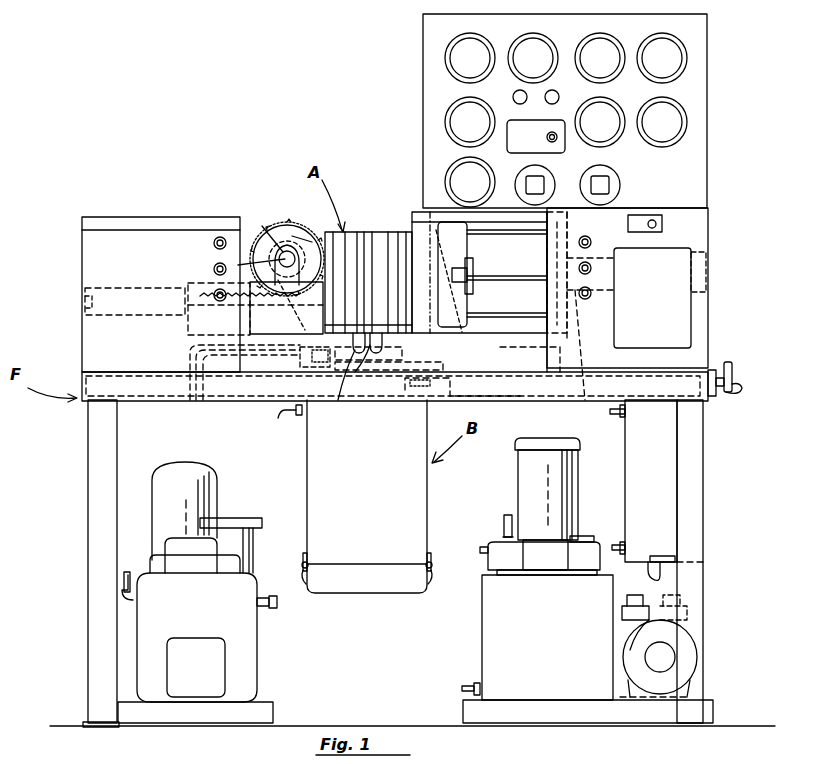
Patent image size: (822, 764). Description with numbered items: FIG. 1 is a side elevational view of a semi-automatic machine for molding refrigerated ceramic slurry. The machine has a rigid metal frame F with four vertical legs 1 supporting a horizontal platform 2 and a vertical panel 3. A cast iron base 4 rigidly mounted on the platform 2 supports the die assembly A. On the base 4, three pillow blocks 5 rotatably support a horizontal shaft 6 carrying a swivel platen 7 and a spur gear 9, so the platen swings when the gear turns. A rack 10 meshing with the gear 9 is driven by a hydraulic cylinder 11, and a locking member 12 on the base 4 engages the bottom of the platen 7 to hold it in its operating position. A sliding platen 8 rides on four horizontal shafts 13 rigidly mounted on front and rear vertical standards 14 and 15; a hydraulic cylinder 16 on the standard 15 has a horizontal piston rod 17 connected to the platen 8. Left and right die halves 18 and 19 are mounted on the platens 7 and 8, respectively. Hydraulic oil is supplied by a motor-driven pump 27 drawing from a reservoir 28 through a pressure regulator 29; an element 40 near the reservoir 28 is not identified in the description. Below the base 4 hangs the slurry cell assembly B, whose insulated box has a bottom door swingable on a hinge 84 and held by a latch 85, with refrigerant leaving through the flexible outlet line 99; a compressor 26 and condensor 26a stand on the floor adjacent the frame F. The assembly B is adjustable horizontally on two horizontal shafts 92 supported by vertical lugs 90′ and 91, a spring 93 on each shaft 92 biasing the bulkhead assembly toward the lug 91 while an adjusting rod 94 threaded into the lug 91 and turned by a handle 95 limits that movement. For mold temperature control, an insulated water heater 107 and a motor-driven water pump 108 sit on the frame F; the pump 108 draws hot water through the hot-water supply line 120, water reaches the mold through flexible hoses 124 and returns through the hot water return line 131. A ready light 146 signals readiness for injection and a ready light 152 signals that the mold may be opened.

The vertical legs 1 is at (87, 492).
The horizontal platform 2 is at (148, 402).
The vertical panel 3 is at (423, 74).
The cast iron base 4 is at (196, 360).
The pillow blocks 5 is at (267, 228).
The horizontal shaft 6 is at (254, 258).
The swivel platen 7 is at (312, 242).
The sliding platen 8 is at (470, 292).
The spur gear 9 is at (284, 222).
The rack 10 is at (210, 285).
The hydraulic cylinder 11 is at (125, 290).
The locking member 12 is at (305, 326).
The horizontal shafts 13 is at (483, 234).
The front vertical standard 14 is at (412, 212).
The rear vertical standard 15 is at (555, 260).
The hydraulic cylinder 16 is at (655, 254).
The horizontal piston rod 17 is at (510, 279).
The left die half 18 is at (358, 232).
The right die half 19 is at (372, 232).
The compressor 26 is at (248, 645).
The condensor 26a is at (218, 482).
The motor-driven pump 27 is at (545, 542).
The reservoir 28 is at (542, 645).
The pressure regulator 29 is at (504, 515).
The drain fitting 40 is at (466, 686).
The hinge 84 is at (430, 574).
The latch 85 is at (302, 562).
The vertical lug 90′ is at (245, 372).
The vertical lug 91 is at (462, 385).
The horizontal shafts 92 is at (440, 358).
The spring 93 is at (300, 354).
The adjusting rod 94 is at (495, 375).
The handle 95 is at (734, 362).
The flexible outlet line 99 is at (285, 418).
The insulated water heater 107 is at (625, 478).
The motor-driven water pump 108 is at (668, 657).
The hot-water supply line 120 is at (618, 544).
The flexible hoses 124 is at (368, 369).
The hot water return line 131 is at (612, 418).
The ready light 146 is at (514, 91).
The ready light 152 is at (557, 91).